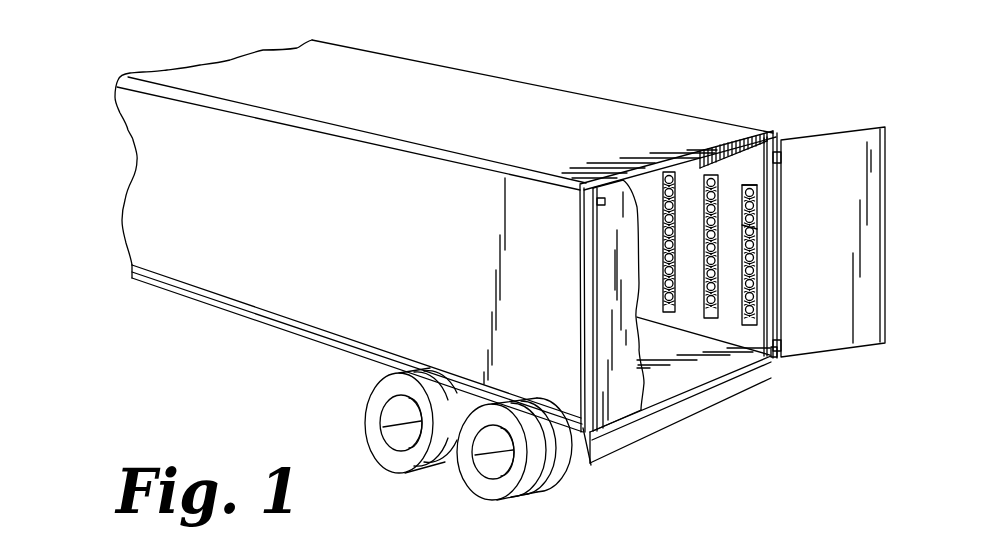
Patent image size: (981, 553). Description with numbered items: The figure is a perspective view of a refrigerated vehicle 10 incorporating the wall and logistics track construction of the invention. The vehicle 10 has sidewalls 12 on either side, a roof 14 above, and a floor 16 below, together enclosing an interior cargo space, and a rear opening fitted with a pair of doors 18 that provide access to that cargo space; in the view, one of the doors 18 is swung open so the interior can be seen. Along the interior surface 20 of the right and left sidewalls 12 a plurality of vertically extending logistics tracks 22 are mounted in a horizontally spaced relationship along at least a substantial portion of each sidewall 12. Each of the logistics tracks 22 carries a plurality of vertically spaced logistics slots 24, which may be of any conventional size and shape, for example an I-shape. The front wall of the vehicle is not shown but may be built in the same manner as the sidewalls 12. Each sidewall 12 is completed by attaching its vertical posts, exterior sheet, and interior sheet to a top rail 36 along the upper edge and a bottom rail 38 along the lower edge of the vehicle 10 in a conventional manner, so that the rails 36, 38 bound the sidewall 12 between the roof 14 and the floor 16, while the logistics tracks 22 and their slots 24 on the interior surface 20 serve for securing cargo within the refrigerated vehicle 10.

The refrigerated vehicle 10 is at (598, 82).
The sidewall 12 is at (302, 295).
The roof 14 is at (417, 80).
The floor 16 is at (664, 385).
The doors 18 is at (850, 347).
The interior surface 20 is at (742, 228).
The logistics tracks 22 is at (750, 263).
The logistics slots 24 is at (755, 192).
The top rail 36 is at (148, 89).
The bottom rail 38 is at (175, 293).